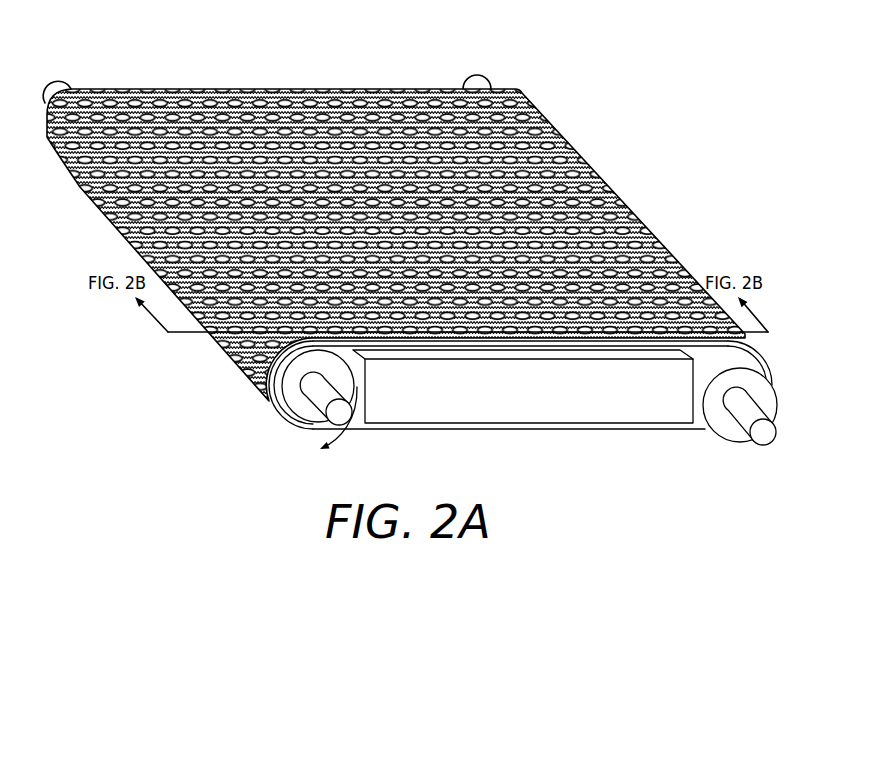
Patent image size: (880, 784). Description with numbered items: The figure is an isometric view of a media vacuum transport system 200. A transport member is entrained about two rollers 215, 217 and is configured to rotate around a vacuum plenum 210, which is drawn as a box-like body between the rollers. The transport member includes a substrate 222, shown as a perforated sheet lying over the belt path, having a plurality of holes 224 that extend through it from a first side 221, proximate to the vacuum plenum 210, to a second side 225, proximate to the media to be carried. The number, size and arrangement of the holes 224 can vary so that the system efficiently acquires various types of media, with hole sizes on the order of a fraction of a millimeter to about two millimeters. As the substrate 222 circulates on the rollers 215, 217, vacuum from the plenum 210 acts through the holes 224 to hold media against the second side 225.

The media vacuum transport system 200 is at (394, 205).
The holes 224 is at (520, 147).
The second side 225 is at (326, 338).
The substrate 222 is at (273, 393).
The roller 215 is at (298, 403).
The first side 221 is at (366, 371).
The vacuum plenum 210 is at (515, 408).
The roller 217 is at (730, 427).